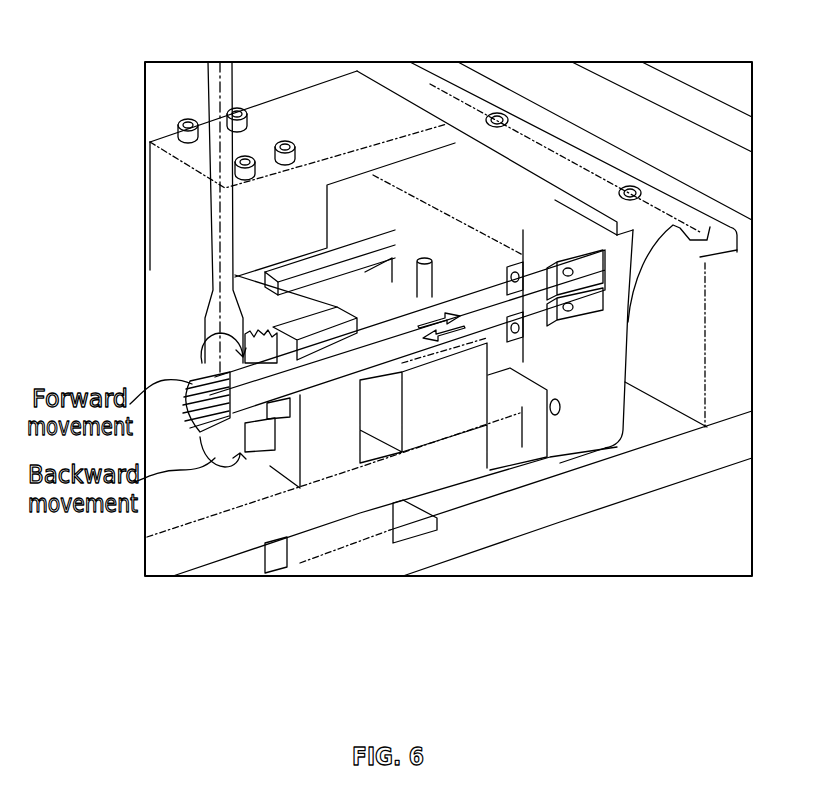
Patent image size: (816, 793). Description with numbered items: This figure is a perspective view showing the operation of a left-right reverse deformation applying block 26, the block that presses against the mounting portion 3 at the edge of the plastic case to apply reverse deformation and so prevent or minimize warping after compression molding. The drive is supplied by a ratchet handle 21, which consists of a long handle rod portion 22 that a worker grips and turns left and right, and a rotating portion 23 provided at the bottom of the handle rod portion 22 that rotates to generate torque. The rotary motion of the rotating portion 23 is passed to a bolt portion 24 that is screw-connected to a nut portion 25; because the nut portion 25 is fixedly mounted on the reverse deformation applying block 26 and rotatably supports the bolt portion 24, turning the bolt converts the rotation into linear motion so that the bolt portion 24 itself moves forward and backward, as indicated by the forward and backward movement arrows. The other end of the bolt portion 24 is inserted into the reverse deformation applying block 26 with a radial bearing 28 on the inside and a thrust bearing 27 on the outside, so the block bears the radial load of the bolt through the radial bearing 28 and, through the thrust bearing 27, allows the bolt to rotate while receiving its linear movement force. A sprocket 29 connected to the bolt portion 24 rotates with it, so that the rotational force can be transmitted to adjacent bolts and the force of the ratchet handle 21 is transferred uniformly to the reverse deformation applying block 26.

The mounting portion 3 is at (657, 177).
The ratchet handle 21 is at (157, 247).
The handle rod portion 22 is at (225, 257).
The rotating portion 23 is at (200, 372).
The bolt portion 24 is at (305, 383).
The nut portion 25 is at (372, 336).
The reverse deformation applying block 26 is at (457, 167).
The thrust bearing 27 is at (517, 333).
The radial bearing 28 is at (557, 258).
The sprocket 29 is at (265, 425).